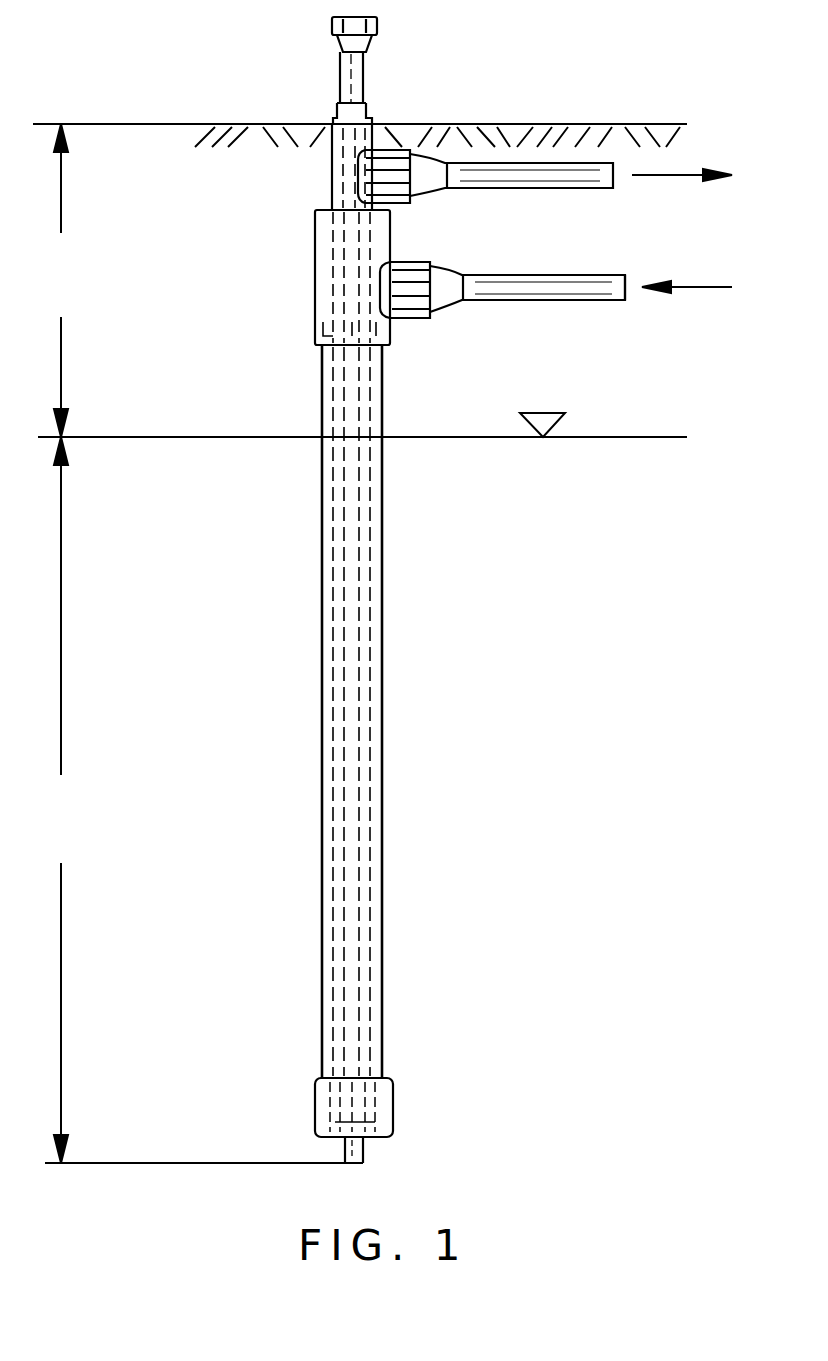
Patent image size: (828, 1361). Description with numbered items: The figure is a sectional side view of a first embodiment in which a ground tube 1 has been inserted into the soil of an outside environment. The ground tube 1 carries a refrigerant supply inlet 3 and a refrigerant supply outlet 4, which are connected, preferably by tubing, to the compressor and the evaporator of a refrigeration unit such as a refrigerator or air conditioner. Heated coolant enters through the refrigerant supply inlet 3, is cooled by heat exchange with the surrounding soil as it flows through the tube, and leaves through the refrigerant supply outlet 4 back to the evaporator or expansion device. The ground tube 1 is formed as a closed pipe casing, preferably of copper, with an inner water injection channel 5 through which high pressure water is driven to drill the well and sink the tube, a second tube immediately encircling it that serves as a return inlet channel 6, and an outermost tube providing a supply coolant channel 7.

The ground tube 1 is at (320, 538).
The refrigerant supply inlet 3 is at (555, 303).
The refrigerant supply outlet 4 is at (520, 140).
The water injection channel 5 is at (360, 564).
The return inlet channel 6 is at (383, 640).
The supply coolant channel 7 is at (366, 673).